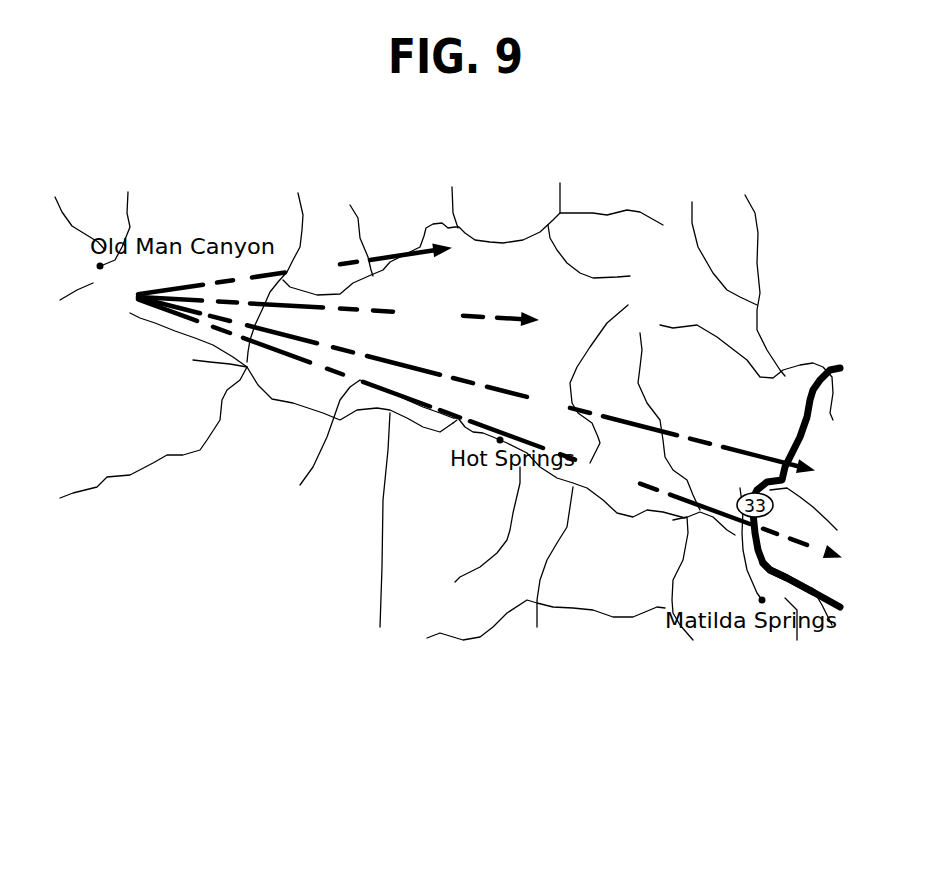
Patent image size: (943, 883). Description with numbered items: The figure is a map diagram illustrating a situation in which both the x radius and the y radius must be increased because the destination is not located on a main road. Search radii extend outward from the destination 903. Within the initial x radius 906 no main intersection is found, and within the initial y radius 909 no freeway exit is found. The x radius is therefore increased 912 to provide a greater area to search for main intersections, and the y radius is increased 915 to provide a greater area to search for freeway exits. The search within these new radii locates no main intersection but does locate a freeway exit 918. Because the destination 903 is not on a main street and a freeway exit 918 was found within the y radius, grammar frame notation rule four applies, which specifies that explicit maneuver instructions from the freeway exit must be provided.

The destination 903 is at (201, 525).
The initial x radius 906 is at (344, 508).
The initial y radius 909 is at (458, 532).
The increased x radius 912 is at (425, 578).
The increased y radius 915 is at (490, 577).
The freeway exit 918 is at (738, 699).